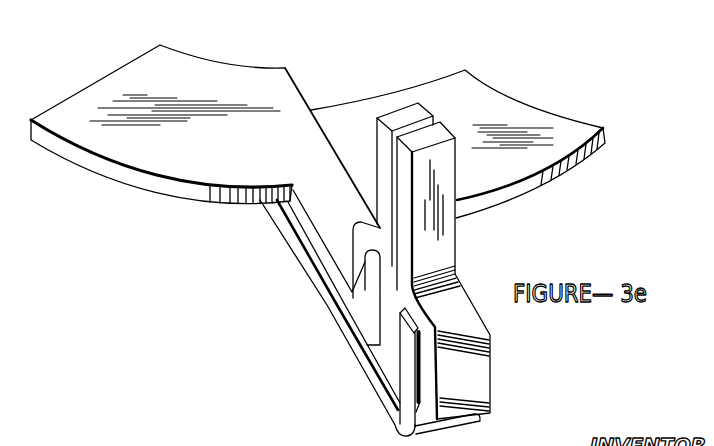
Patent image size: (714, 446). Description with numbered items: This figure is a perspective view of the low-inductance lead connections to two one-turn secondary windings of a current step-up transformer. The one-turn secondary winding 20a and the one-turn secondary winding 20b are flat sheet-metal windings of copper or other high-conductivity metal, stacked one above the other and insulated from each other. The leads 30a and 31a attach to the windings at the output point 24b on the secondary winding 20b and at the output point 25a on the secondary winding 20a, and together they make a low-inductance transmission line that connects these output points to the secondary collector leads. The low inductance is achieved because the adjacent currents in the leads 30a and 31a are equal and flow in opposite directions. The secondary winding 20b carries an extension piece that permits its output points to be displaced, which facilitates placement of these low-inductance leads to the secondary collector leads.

The one-turn secondary winding 20a is at (197, 82).
The one-turn secondary winding 20b is at (523, 110).
The lead 31a is at (401, 116).
The lead 30a is at (437, 229).
The output point 25a is at (322, 247).
The output point 24b is at (400, 422).